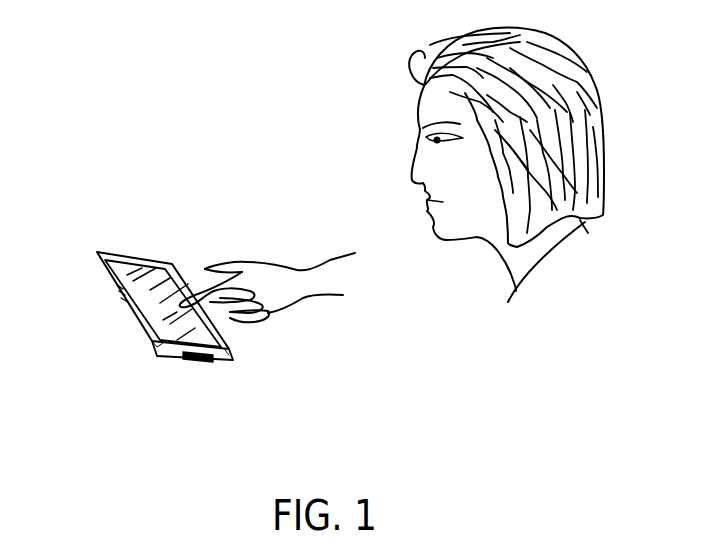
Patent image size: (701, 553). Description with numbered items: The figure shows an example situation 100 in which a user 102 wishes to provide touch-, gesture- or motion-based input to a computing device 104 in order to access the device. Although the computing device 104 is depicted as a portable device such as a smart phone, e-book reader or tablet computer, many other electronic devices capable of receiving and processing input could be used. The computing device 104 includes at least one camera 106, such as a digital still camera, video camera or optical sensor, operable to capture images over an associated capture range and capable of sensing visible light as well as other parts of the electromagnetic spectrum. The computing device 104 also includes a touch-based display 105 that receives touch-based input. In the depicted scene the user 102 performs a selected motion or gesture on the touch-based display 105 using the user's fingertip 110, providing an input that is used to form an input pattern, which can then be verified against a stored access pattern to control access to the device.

The example situation 100 is at (148, 118).
The user 102 is at (376, 83).
The computing device 104 is at (225, 364).
The touch-based display 105 is at (158, 312).
The camera 106 is at (138, 257).
The fingertip 110 is at (183, 297).